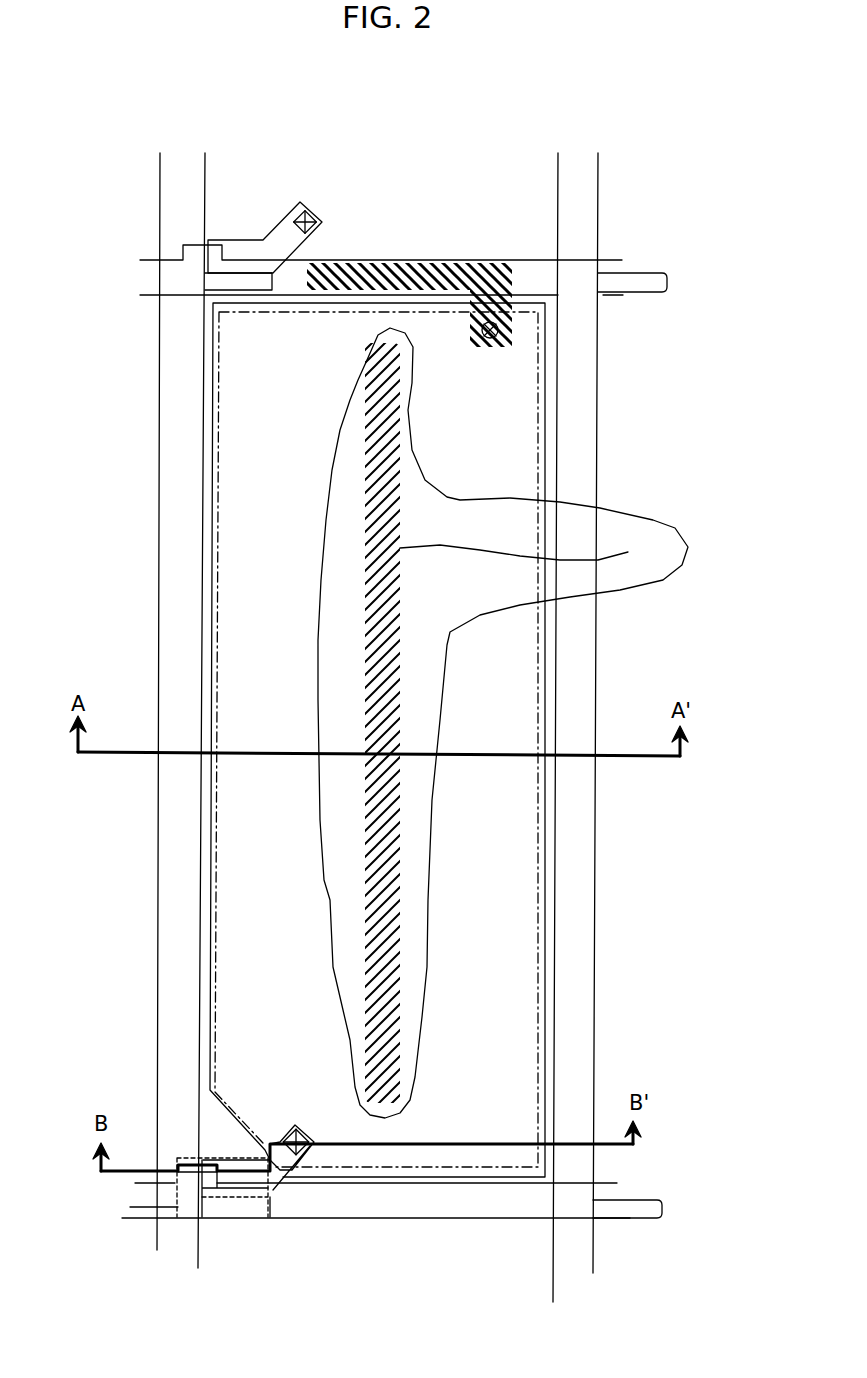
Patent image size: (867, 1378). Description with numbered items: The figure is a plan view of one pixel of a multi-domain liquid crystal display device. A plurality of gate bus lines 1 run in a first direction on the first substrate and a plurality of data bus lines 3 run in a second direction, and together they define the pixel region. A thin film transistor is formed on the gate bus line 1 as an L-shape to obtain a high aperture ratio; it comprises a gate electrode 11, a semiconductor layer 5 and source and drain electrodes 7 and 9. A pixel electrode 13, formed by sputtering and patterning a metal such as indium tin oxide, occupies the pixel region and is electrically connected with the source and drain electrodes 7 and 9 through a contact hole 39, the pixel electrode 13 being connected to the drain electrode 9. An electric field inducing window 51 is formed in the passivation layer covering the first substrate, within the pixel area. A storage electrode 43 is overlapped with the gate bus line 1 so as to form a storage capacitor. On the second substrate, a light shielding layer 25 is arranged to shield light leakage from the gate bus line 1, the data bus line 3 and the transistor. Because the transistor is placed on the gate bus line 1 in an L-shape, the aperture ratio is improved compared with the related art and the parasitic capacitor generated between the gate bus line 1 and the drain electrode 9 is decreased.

The gate bus line 1 is at (140, 277).
The data bus line 3 is at (185, 655).
The semiconductor layer 5 is at (243, 1153).
The source electrode 7 is at (226, 1215).
The drain electrode 9 is at (273, 1188).
The gate electrode 11 is at (187, 1185).
The pixel electrode 13 is at (213, 828).
The light shielding layer 25 is at (347, 312).
The contact hole 39 is at (490, 345).
The storage electrode 43 is at (487, 268).
The electric field inducing window 51 is at (503, 723).